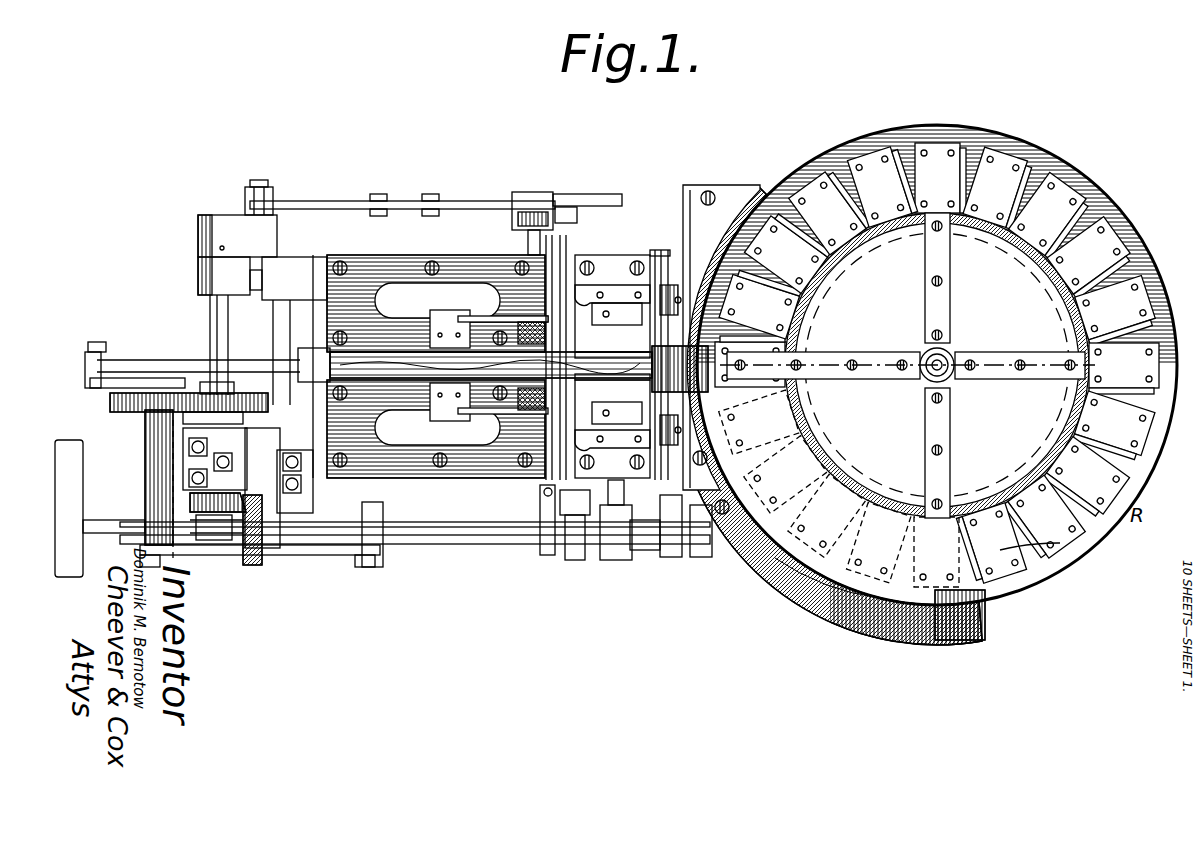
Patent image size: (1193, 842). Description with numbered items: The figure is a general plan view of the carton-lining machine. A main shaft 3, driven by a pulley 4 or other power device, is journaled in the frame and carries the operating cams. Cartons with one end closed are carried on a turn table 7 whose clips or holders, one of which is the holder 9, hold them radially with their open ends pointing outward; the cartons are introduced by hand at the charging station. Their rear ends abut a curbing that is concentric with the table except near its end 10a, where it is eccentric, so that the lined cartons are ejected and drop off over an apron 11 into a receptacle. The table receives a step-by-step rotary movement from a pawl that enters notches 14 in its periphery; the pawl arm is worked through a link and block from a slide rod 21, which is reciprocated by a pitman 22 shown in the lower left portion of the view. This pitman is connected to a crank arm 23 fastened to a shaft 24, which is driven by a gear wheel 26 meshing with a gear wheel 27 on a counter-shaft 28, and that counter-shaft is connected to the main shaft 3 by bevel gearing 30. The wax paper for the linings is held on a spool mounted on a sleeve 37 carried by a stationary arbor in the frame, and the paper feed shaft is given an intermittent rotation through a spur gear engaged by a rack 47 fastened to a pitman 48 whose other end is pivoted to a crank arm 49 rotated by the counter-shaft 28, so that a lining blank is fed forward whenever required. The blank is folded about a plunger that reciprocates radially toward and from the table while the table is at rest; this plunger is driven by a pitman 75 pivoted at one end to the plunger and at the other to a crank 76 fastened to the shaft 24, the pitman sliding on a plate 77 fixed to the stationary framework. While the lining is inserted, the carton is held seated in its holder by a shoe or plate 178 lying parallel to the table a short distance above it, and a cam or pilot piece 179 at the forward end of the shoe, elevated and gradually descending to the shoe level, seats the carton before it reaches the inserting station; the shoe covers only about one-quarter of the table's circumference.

The shaft 3 is at (490, 538).
The pulley 4 is at (84, 460).
The turn table 7 is at (1137, 243).
The clip or holder 9 is at (786, 562).
The eccentric end of curbing 10a is at (1042, 565).
The apron 11 is at (818, 600).
The notches 14 is at (815, 362).
The slide rod 21 is at (453, 524).
The pitman 22 is at (260, 565).
The crank arm 23 is at (205, 545).
The shaft 24 is at (172, 556).
The gear wheel 26 is at (111, 403).
The gear wheel 27 is at (233, 383).
The counter-shaft 28 is at (220, 323).
The bevel gearing 30 is at (246, 500).
The sleeve 37 is at (657, 256).
The rack 47 is at (607, 205).
The pitman 48 is at (310, 202).
The crank arm 49 is at (278, 241).
The pitman 75 is at (183, 359).
The crank 76 is at (88, 382).
The plate 77 is at (327, 300).
The shoe or plate 178 is at (907, 365).
The cam or pilot piece 179 is at (808, 266).